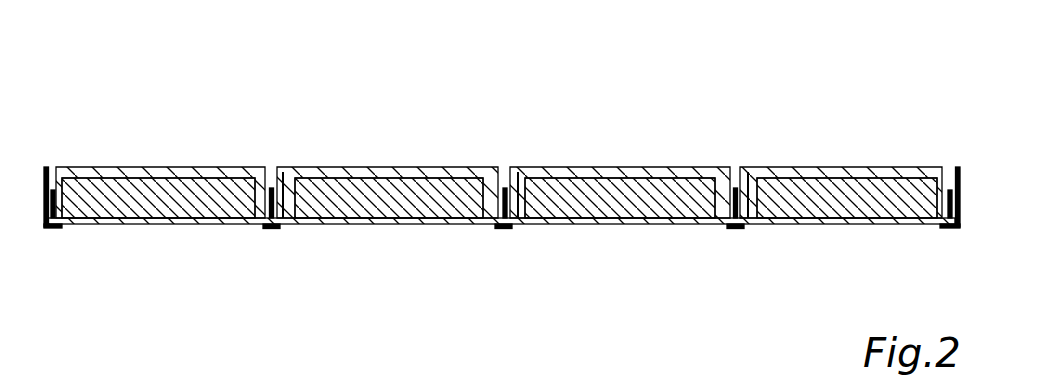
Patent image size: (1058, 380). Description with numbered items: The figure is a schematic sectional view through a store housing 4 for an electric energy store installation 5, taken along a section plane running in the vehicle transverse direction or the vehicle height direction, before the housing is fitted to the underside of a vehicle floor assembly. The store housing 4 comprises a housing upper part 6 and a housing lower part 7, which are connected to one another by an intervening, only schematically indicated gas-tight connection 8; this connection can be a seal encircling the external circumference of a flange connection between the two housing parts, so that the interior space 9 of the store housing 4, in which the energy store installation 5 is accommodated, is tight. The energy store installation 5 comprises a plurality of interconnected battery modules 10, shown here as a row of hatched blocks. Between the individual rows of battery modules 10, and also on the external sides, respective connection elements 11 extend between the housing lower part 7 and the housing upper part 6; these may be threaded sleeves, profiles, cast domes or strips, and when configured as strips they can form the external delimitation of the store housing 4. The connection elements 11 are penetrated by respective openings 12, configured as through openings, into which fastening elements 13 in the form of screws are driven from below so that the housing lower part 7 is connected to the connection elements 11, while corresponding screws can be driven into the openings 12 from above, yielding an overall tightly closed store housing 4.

The store housing 4 is at (563, 104).
The electric energy store installation 5 is at (428, 210).
The housing upper part 6 is at (365, 167).
The housing lower part 7 is at (343, 224).
The gas-tight connection 8 is at (58, 228).
The interior space 9 is at (185, 212).
The battery module 10 is at (607, 180).
The connection element 11 is at (53, 218).
The opening 12 is at (271, 188).
The fastening element 13 is at (503, 229).